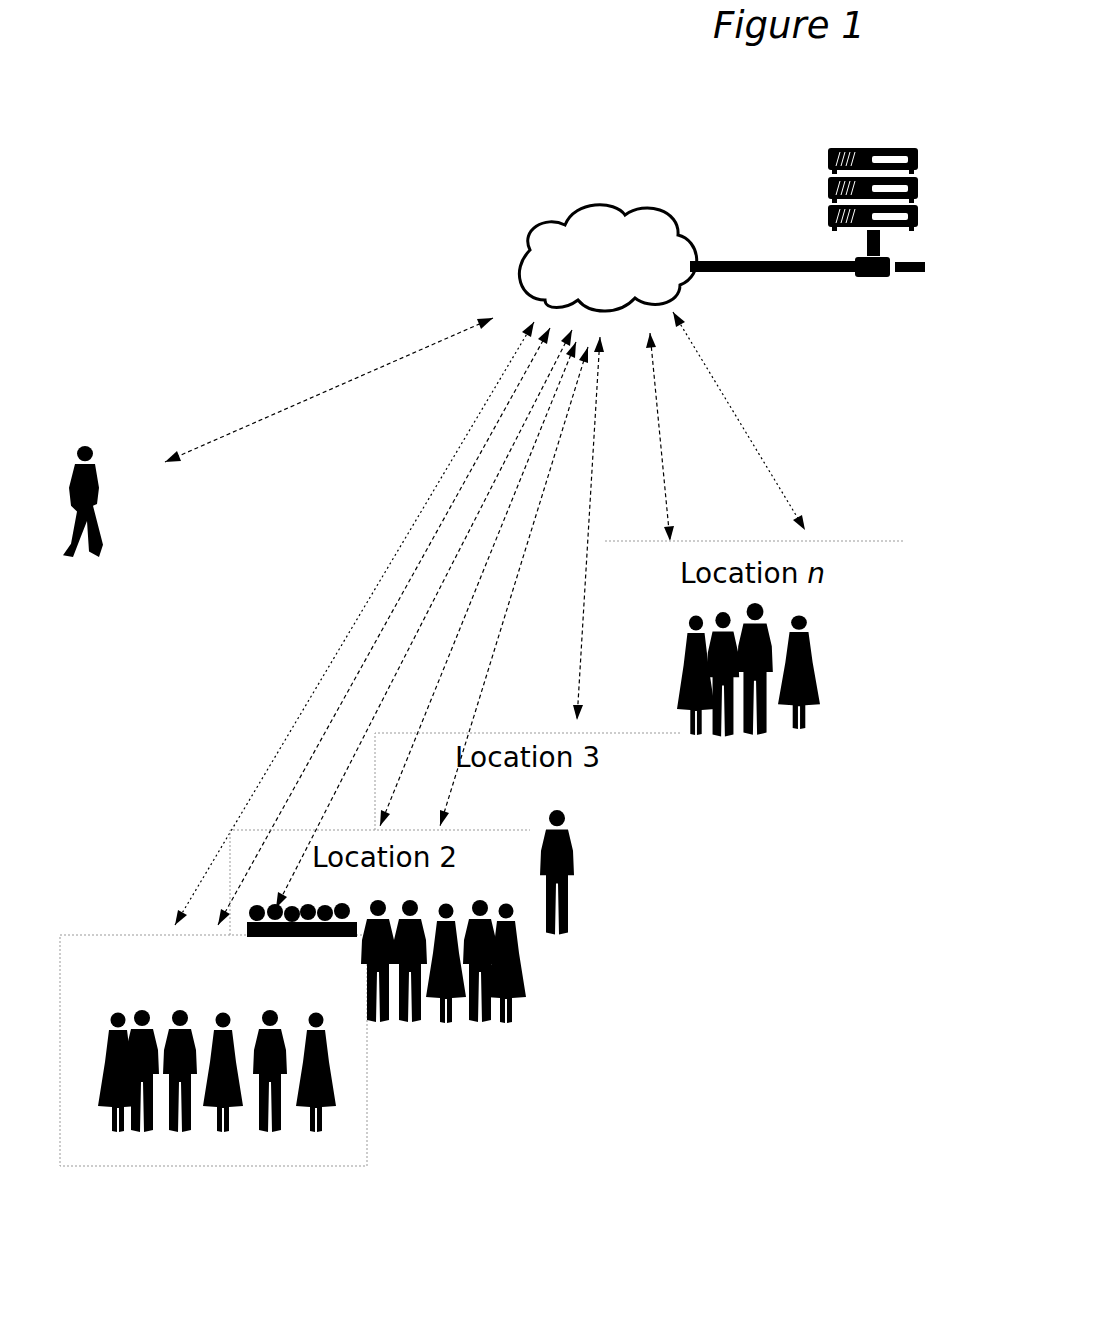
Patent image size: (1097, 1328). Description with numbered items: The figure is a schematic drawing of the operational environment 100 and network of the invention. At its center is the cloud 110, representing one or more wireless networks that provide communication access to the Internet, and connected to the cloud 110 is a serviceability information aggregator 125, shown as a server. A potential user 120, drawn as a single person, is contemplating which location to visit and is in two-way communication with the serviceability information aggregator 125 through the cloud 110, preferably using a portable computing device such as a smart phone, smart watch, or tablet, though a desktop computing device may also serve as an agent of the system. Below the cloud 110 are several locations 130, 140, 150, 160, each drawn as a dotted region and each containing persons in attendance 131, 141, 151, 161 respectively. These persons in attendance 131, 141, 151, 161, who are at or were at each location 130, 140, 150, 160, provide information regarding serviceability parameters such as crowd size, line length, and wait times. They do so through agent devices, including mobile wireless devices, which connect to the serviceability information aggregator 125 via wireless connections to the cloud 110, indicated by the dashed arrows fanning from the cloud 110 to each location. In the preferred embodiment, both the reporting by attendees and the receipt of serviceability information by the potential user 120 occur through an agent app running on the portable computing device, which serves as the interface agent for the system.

The operational environment 100 is at (369, 145).
The cloud 110 is at (607, 200).
The potential user 120 is at (85, 437).
The serviceability information aggregator 125 is at (865, 130).
The location 130 is at (213, 1168).
The persons in attendance 131 is at (93, 1068).
The location 140 is at (380, 1062).
The persons in attendance 141 is at (418, 1020).
The location 150 is at (678, 845).
The persons in attendance 151 is at (550, 945).
The location 160 is at (757, 772).
The persons in attendance 161 is at (710, 740).